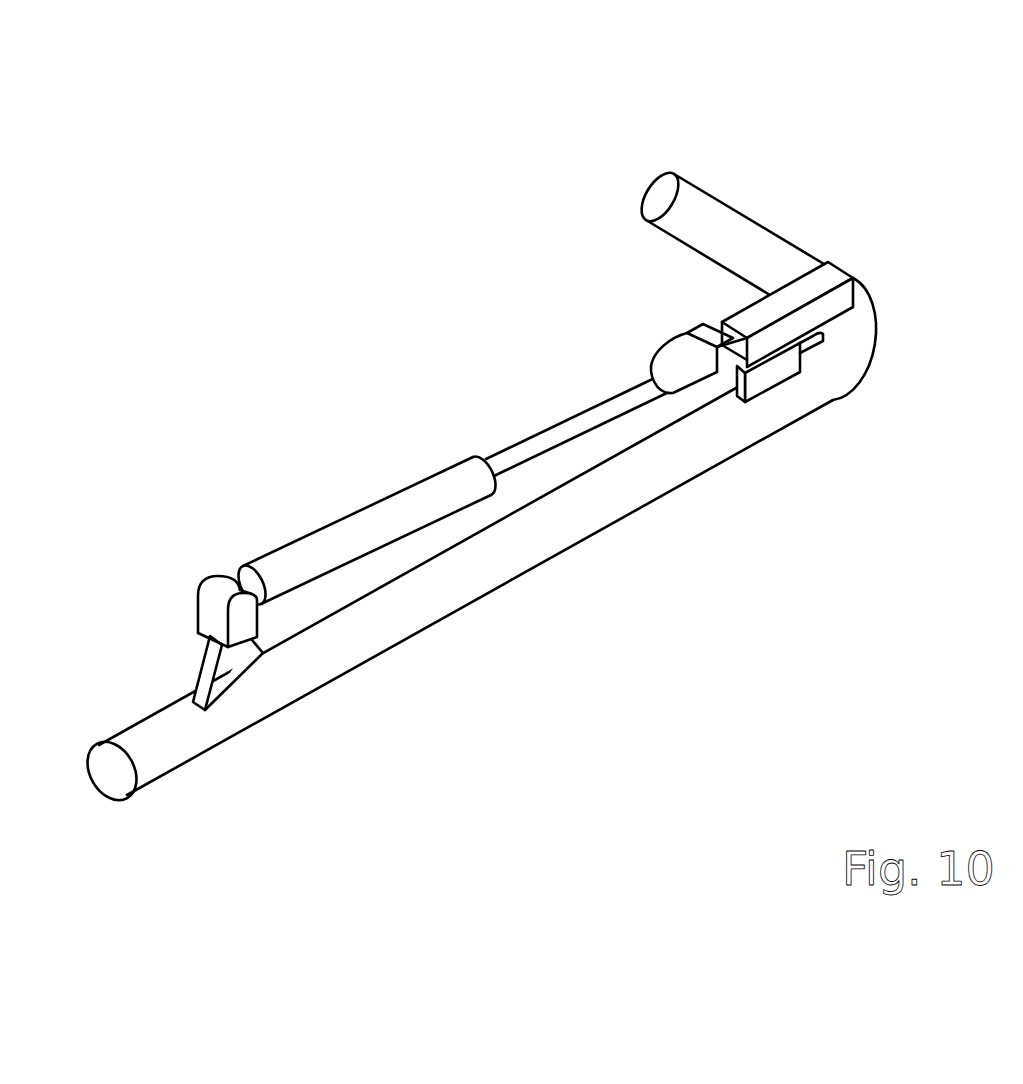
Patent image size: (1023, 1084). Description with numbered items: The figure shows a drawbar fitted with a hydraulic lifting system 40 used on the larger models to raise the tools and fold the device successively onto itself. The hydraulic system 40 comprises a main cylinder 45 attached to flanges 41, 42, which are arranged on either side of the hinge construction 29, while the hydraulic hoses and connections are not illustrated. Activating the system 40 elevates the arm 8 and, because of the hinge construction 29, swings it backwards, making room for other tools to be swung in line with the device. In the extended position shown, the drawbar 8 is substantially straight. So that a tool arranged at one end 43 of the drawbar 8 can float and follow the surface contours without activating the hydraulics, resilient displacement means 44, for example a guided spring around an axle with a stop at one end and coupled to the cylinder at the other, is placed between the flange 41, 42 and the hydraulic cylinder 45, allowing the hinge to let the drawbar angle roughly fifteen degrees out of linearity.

The arm 8 is at (613, 510).
The hinge construction 29 is at (467, 692).
The hydraulic lifting system 40 is at (265, 418).
The flange 41 is at (225, 657).
The flange 42 is at (783, 367).
The end of the drawbar 43 is at (643, 185).
The resilient displacement means 44 is at (808, 283).
The main cylinder 45 is at (447, 478).